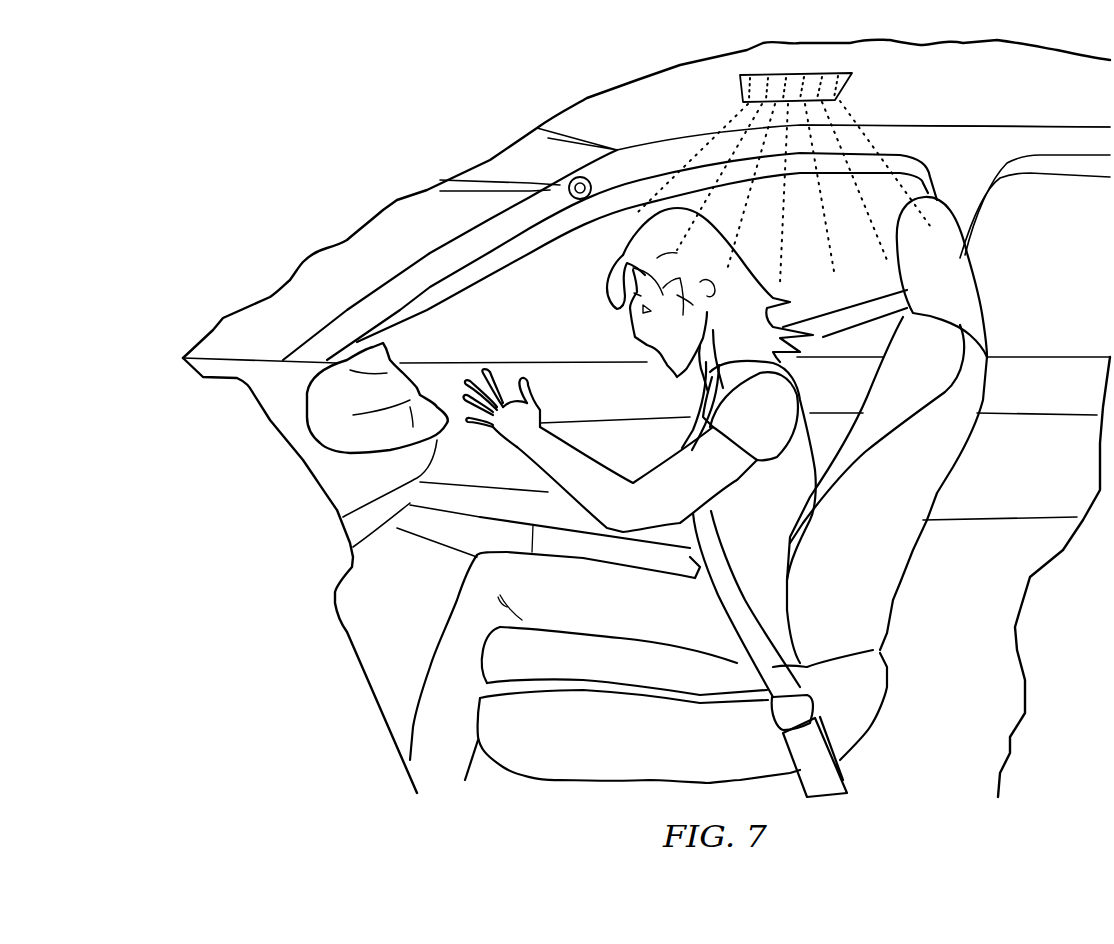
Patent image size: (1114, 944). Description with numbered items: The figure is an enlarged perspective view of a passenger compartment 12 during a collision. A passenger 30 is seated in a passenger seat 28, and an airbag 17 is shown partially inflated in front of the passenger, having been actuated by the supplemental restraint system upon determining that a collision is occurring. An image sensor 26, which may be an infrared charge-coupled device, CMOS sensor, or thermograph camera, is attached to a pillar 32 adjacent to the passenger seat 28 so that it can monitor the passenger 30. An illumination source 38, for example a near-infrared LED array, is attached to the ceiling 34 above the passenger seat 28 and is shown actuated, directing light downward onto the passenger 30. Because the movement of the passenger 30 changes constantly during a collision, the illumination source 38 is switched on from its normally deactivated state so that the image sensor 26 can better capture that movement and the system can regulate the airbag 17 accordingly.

The passenger compartment 12 is at (368, 208).
The airbag 17 is at (420, 387).
The image sensor 26 is at (568, 199).
The passenger seat 28 is at (867, 557).
The passenger 30 is at (774, 527).
The pillar 32 is at (516, 241).
The ceiling 34 is at (951, 96).
The illumination source 38 is at (740, 88).